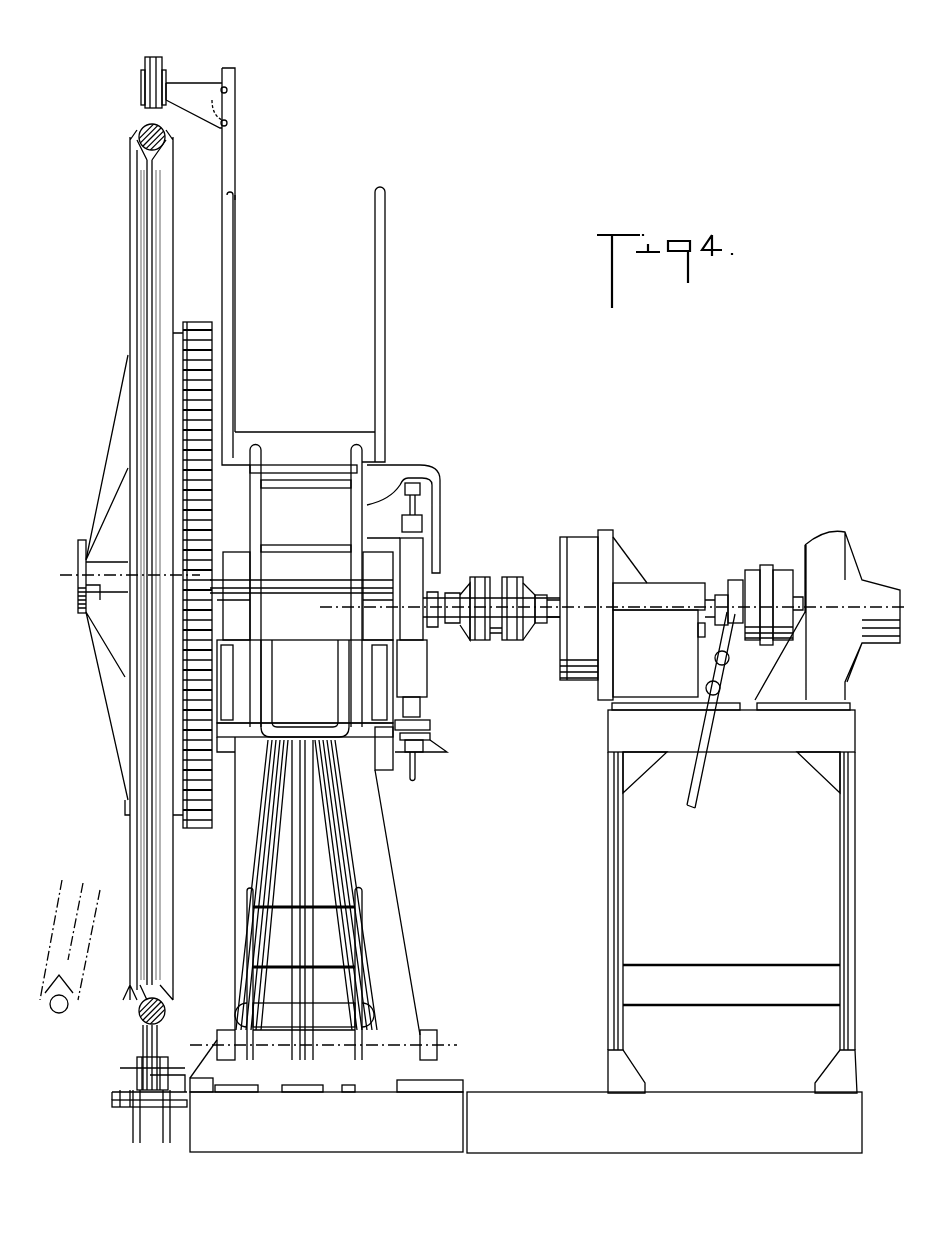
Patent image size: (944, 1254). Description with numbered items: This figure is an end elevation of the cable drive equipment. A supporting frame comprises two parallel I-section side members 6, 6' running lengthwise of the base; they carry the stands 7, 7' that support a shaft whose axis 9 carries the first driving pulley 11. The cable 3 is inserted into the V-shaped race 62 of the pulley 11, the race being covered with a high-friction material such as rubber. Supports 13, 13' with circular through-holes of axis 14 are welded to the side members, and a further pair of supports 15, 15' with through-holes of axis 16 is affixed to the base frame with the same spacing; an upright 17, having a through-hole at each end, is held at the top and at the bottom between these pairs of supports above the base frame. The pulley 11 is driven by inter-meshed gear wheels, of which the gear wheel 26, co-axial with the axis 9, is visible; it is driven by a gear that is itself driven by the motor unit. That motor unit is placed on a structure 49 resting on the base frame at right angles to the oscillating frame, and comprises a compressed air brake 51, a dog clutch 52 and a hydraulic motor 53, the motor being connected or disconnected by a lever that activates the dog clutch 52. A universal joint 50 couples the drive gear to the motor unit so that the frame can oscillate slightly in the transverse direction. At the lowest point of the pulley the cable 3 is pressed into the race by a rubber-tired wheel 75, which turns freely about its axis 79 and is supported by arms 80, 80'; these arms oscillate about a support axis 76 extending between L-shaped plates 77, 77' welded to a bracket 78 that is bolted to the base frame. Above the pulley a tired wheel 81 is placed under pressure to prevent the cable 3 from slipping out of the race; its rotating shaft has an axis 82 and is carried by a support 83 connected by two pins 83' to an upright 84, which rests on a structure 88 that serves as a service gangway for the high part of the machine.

The cable 3 is at (140, 130).
The side member 6 is at (334, 658).
The side member 6' is at (265, 682).
The stand 7 is at (406, 612).
The stand 7' is at (234, 574).
The axis 9 is at (83, 576).
The first driving pulley 11 is at (128, 650).
The support 13 is at (421, 646).
The support 13' is at (242, 760).
The axis 14 is at (355, 765).
The support 15 is at (372, 1039).
The support 15' is at (226, 1039).
The axis 16 is at (438, 1045).
The upright 17 is at (378, 867).
The gear wheel 26 is at (203, 820).
The structure 49 is at (759, 742).
The universal joint 50 is at (508, 580).
The compressed air brake 51 is at (580, 545).
The dog clutch 52 is at (759, 580).
The hydraulic motor 53 is at (835, 545).
The race 62 is at (140, 150).
The wheel 75 is at (143, 1035).
The axis 76 is at (112, 1097).
The L-shaped plate 77 is at (109, 1125).
The L-shaped plate 77' is at (179, 1137).
The bracket 78 is at (152, 1115).
The axis 79 is at (167, 1058).
The arm 80 is at (128, 1074).
The arm 80' is at (194, 1100).
The wheel 81 is at (163, 60).
The axis 82 is at (140, 90).
The support 83 is at (213, 82).
The pin 83' is at (255, 100).
The upright 84 is at (235, 160).
The structure 88 is at (298, 440).